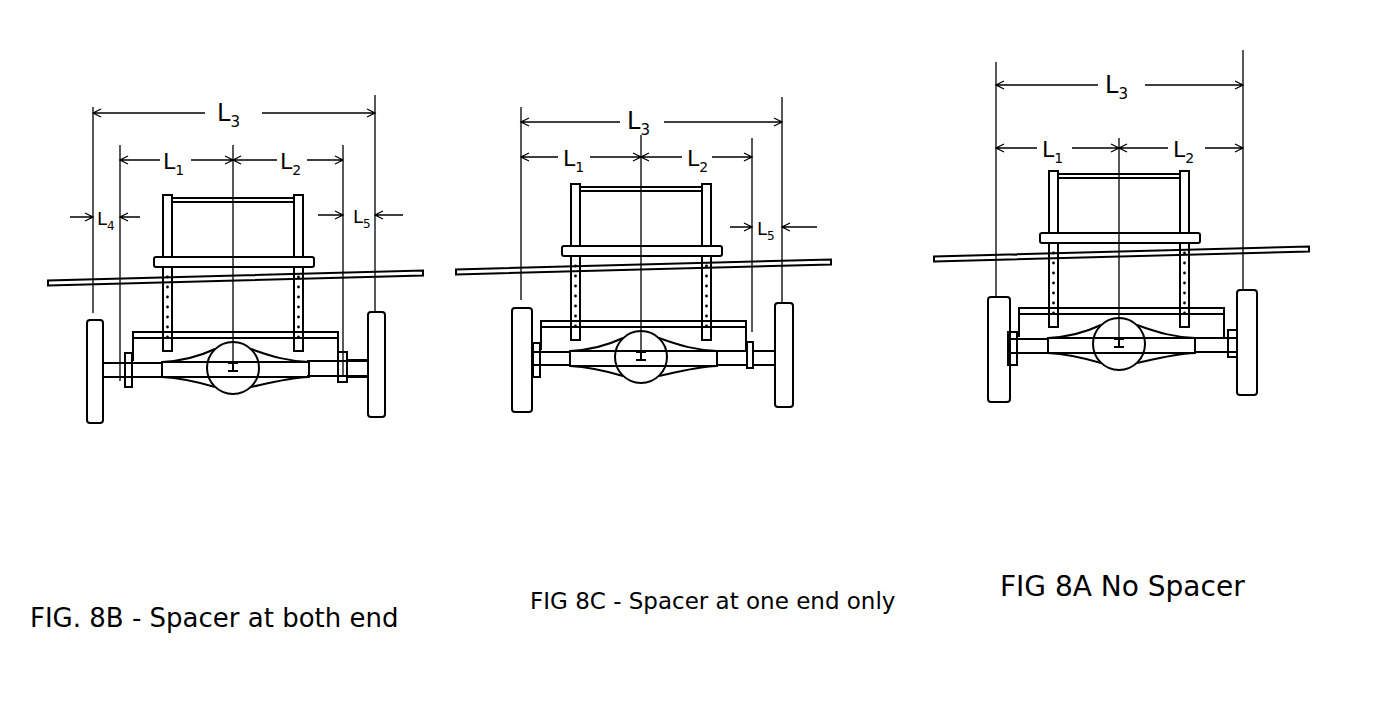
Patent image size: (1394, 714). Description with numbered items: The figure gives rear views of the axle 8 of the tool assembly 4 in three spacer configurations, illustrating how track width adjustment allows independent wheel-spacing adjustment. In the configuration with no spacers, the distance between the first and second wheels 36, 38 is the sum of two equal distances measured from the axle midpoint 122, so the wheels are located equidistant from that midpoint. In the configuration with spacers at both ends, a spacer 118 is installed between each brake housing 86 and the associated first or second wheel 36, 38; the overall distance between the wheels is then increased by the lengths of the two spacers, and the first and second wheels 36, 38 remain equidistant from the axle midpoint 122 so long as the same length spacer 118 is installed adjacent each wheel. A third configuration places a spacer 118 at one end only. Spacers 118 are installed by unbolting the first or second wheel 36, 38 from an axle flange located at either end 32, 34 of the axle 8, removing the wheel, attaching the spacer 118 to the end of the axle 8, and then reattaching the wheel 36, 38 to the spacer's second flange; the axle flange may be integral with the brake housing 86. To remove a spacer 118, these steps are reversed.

In FIG. 8C, the tool assembly 4 is at (673, 342).
In FIG. 8A, the tool assembly 4 is at (1144, 325).
In FIG. 8B, the axle 8 is at (192, 367).
In FIG. 8C, the axle 8 is at (687, 360).
In FIG. 8A, the axle 8 is at (1173, 348).
In FIG. 8B, the axle end 32 is at (142, 370).
In FIG. 8B, the axle end 34 is at (325, 367).
In FIG. 8B, the first wheel 36 is at (98, 397).
In FIG. 8C, the first wheel 36 is at (525, 395).
In FIG. 8A, the first wheel 36 is at (1000, 378).
In FIG. 8B, the second wheel 38 is at (378, 385).
In FIG. 8C, the second wheel 38 is at (782, 368).
In FIG. 8A, the second wheel 38 is at (1243, 378).
In FIG. 8B, the brake housing 86 is at (345, 370).
In FIG. 8B, the spacer 118 is at (360, 368).
In FIG. 8C, the spacer 118 is at (763, 366).
In FIG. 8B, the axle midpoint 122 is at (225, 390).
In FIG. 8C, the axle midpoint 122 is at (632, 375).
In FIG. 8A, the axle midpoint 122 is at (1115, 355).